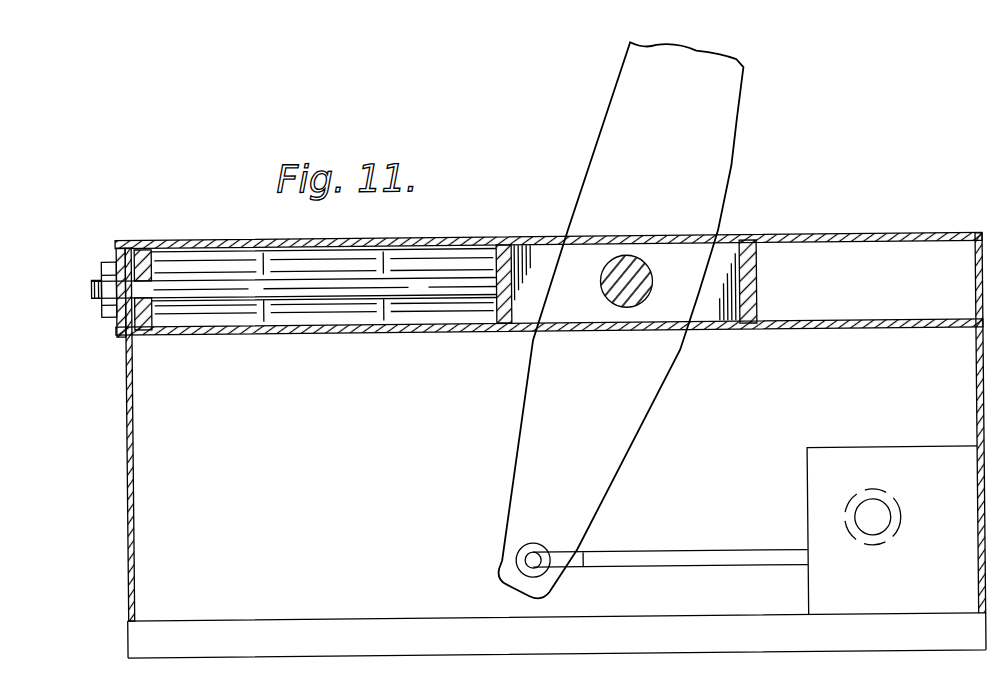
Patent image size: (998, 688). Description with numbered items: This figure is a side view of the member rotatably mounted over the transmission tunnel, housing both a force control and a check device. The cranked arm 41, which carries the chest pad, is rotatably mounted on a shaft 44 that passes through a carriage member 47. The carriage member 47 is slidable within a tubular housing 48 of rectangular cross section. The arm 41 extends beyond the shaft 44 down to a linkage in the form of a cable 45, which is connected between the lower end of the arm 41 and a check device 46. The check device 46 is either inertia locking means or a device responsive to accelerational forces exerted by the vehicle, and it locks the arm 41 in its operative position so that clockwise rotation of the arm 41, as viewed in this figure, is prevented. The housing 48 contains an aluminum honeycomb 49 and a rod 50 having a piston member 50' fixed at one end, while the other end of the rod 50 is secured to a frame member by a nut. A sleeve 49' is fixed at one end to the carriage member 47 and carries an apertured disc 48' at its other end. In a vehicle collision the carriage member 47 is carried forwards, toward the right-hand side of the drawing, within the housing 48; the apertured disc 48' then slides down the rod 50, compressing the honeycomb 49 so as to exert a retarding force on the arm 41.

The cranked arm 41 is at (702, 164).
The shaft 44 is at (613, 292).
The cable 45 is at (713, 556).
The check device 46 is at (818, 476).
The carriage member 47 is at (706, 327).
The tubular housing 48 is at (298, 264).
The apertured disc 48' is at (153, 315).
The aluminum honeycomb 49 is at (324, 235).
The sleeve 49' is at (325, 341).
The rod 50 is at (294, 330).
The piston member 50' is at (520, 260).